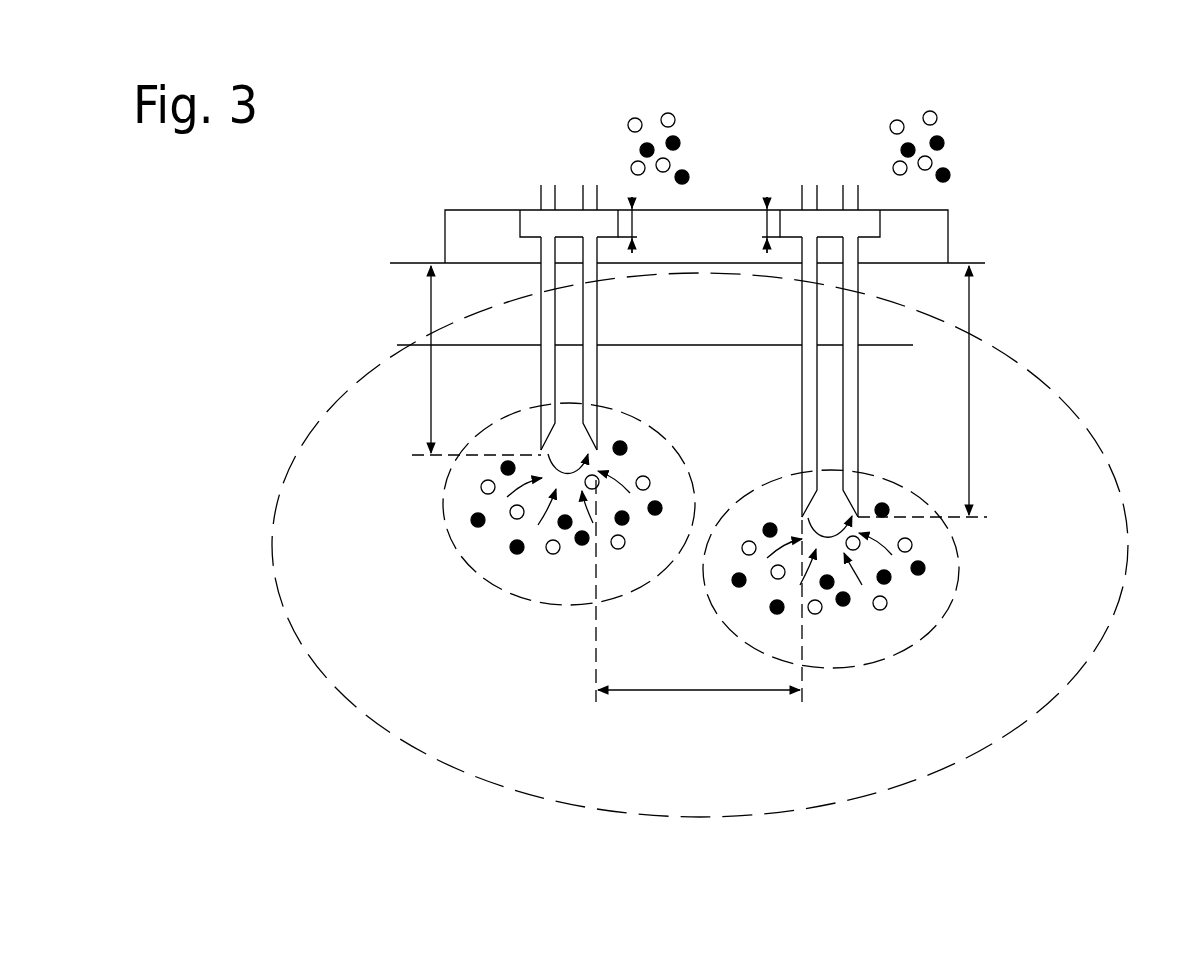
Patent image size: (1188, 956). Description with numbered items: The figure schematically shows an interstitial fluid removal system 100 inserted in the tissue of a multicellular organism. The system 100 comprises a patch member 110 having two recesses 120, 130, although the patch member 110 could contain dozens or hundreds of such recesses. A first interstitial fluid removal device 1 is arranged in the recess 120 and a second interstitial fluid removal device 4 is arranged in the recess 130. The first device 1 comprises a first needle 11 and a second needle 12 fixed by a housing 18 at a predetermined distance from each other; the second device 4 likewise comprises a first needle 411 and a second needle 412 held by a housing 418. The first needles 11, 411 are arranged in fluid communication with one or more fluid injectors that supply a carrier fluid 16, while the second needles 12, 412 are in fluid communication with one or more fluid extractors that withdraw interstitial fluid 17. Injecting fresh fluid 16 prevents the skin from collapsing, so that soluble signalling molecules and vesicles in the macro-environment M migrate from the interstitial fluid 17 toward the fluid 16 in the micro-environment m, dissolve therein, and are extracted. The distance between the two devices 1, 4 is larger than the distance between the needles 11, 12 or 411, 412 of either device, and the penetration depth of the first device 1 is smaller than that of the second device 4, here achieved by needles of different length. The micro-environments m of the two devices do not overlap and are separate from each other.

The interstitial fluid removal device 1 is at (524, 401).
The interstitial fluid removal device 4 is at (878, 464).
The first needle 11 is at (547, 365).
The second needle 12 is at (590, 375).
The fluid 16 is at (547, 177).
The interstitial fluid 17 is at (590, 187).
The housing 18 is at (532, 236).
The interstitial fluid removal system 100 is at (549, 579).
The patch member 110 is at (470, 225).
The recess 120 is at (524, 201).
The recess 130 is at (786, 202).
The first needle 411 is at (808, 427).
The second needle 412 is at (850, 433).
The housing 418 is at (868, 237).
The micro-environment m is at (478, 543).
The macro-environment M is at (1093, 607).